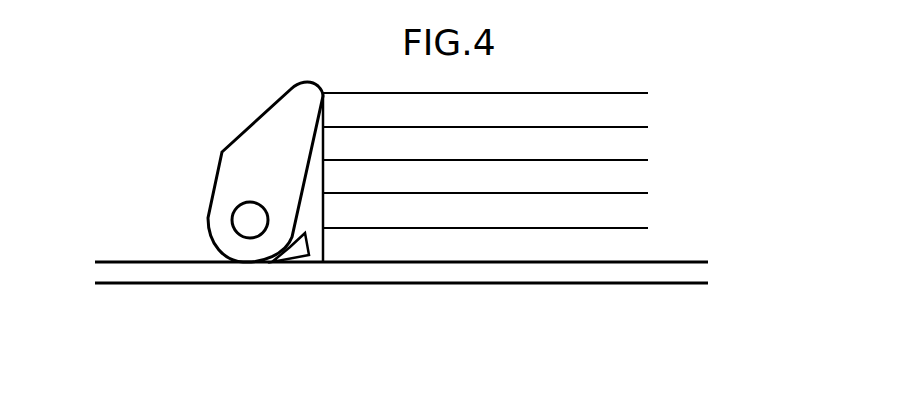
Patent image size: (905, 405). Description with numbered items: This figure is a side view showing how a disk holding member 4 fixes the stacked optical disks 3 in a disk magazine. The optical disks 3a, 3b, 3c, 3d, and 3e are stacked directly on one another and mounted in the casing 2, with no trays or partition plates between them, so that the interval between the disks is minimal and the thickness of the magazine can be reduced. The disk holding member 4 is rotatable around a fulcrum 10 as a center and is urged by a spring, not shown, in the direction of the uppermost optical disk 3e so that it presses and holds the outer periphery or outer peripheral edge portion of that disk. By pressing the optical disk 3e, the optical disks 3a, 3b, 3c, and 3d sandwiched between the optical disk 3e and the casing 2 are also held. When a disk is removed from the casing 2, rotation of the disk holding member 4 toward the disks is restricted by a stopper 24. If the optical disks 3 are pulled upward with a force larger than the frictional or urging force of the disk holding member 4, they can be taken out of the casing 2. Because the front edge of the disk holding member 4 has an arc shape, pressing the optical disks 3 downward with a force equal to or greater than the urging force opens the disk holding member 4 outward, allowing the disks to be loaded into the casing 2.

The casing 2 is at (408, 277).
The optical disks 3 is at (585, 211).
The optical disk 3a is at (538, 281).
The optical disk 3b is at (611, 210).
The optical disk 3c is at (613, 173).
The optical disk 3d is at (605, 138).
The optical disk 3e is at (610, 110).
The disk holding member 4 is at (253, 252).
The fulcrum 10 is at (247, 220).
The stopper 24 is at (297, 248).